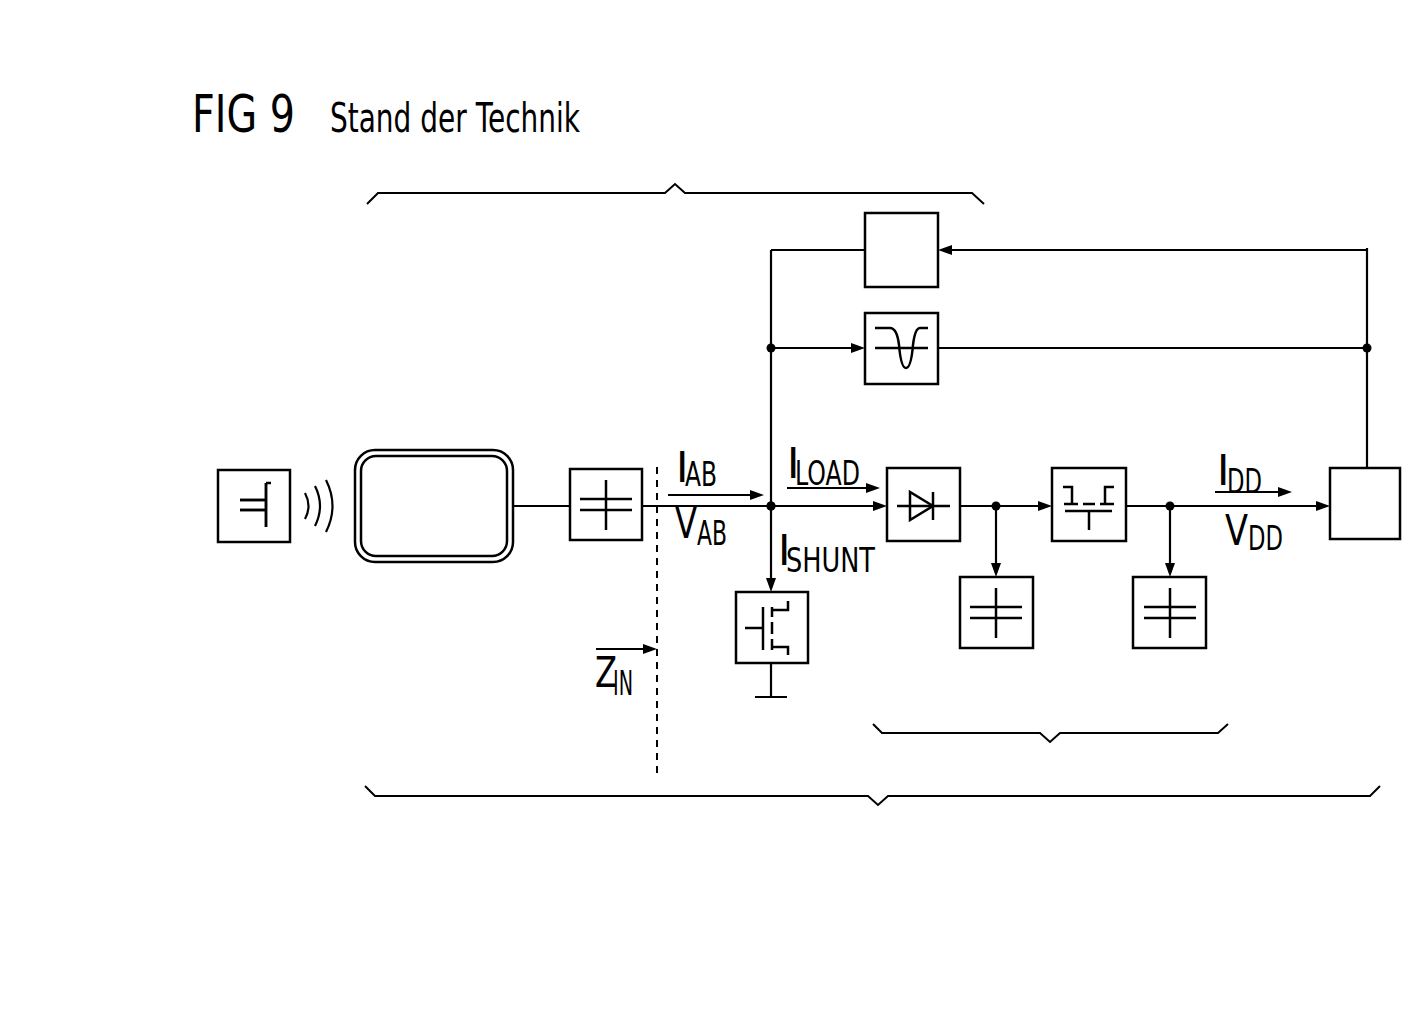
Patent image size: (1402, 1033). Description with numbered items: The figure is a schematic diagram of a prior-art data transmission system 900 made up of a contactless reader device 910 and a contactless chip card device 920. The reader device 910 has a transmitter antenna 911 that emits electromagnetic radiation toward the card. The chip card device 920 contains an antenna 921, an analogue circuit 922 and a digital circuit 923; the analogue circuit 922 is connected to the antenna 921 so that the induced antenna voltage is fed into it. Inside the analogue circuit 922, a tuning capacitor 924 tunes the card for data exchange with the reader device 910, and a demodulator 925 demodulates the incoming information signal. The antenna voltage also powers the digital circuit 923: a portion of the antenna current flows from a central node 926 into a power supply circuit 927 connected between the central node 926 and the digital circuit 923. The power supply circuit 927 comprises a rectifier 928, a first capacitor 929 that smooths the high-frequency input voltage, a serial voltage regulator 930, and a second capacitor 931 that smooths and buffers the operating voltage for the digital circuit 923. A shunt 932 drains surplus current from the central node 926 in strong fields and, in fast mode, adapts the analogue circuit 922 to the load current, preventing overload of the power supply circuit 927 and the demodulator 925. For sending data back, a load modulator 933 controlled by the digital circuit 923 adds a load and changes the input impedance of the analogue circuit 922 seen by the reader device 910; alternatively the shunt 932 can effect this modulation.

The data transmission system 900 is at (1292, 212).
The contactless reader device 910 is at (252, 543).
The transmitter antenna 911 is at (258, 488).
The contactless chip card device 920 is at (872, 815).
The antenna 921 is at (437, 450).
The analogue circuit 922 is at (675, 174).
The digital circuit 923 is at (1367, 540).
The tuning capacitor 924 is at (610, 469).
The demodulator 925 is at (938, 341).
The central node 926 is at (768, 500).
The power supply circuit 927 is at (1050, 753).
The rectifier 928 is at (925, 468).
The first capacitor 929 is at (996, 649).
The serial voltage regulator 930 is at (1090, 468).
The second capacitor 931 is at (1170, 649).
The shunt 932 is at (808, 625).
The load modulator 933 is at (938, 265).